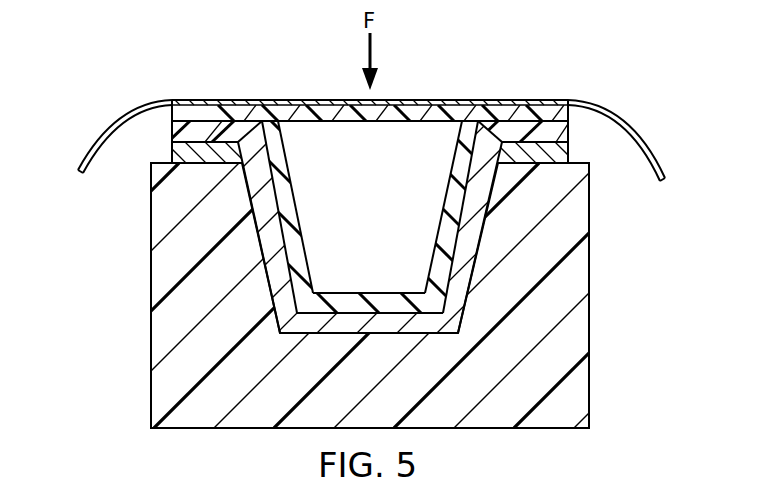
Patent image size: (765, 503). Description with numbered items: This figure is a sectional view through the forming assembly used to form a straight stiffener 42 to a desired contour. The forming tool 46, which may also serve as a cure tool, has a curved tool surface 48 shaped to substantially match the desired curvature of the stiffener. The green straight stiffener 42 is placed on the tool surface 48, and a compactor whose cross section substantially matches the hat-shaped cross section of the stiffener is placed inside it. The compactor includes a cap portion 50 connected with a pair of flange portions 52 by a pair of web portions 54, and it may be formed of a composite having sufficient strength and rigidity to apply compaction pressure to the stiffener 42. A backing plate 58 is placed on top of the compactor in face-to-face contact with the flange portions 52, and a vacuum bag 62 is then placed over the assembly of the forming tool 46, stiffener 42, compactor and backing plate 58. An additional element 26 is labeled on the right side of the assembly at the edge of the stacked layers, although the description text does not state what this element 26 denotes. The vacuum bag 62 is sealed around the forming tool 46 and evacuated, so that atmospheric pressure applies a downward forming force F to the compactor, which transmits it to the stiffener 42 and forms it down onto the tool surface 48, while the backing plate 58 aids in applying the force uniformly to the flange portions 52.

The conformal base layer 26 is at (568, 148).
The straight stiffener 42 is at (283, 287).
The forming tool 46 is at (146, 345).
The tool surface 48 is at (162, 152).
The cap portion 50 is at (363, 290).
The flange portions 52 is at (539, 128).
The web portions 54 is at (280, 182).
The backing plate 58 is at (233, 108).
The vacuum bag 62 is at (100, 134).